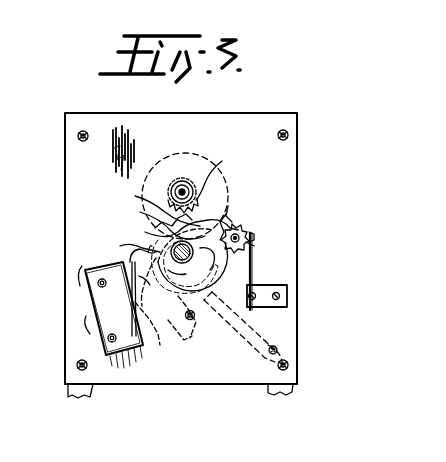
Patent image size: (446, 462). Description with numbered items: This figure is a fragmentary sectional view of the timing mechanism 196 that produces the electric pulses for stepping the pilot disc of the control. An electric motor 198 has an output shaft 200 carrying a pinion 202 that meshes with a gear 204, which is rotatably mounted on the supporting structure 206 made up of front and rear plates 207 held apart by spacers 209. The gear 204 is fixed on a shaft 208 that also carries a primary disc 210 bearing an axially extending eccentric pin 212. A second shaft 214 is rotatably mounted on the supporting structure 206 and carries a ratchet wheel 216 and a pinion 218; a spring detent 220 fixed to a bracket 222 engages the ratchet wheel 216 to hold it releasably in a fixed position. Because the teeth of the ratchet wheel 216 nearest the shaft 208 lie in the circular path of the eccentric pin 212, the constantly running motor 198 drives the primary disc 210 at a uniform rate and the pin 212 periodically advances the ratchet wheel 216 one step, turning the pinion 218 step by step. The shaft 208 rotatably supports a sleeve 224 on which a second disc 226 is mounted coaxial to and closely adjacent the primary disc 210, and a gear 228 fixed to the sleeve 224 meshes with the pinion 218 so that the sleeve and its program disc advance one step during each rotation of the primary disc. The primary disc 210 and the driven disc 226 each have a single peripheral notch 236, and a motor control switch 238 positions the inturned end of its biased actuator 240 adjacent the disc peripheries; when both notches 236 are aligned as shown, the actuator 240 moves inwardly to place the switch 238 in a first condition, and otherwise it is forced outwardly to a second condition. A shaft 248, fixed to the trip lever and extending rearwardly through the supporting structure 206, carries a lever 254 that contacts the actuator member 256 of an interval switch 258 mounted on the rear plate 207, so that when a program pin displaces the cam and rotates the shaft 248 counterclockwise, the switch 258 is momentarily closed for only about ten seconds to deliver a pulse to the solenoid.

The timing mechanism 196 is at (284, 112).
The electric motor 198 is at (178, 153).
The output shaft 200 is at (180, 190).
The pinion 202 is at (220, 173).
The gear 204 is at (150, 198).
The supporting structure 206 is at (291, 235).
The front and rear plates 207 is at (65, 183).
The shaft 208 is at (150, 232).
The spacers 209 is at (77, 135).
The primary disc 210 is at (152, 216).
The eccentric pin 212 is at (230, 206).
The second shaft 214 is at (247, 226).
The ratchet wheel 216 is at (254, 246).
The pinion 218 is at (252, 235).
The spring detent 220 is at (254, 258).
The bracket 222 is at (272, 290).
The sleeve 224 is at (190, 261).
The second disc 226 is at (189, 310).
The gear 228 is at (228, 216).
The peripheral notch 236 is at (122, 246).
The motor control switch 238 is at (98, 300).
The actuator 240 is at (128, 260).
The shaft 248 is at (279, 348).
The lever 254 is at (243, 328).
The actuator member 256 is at (192, 322).
The interval switch 258 is at (151, 308).